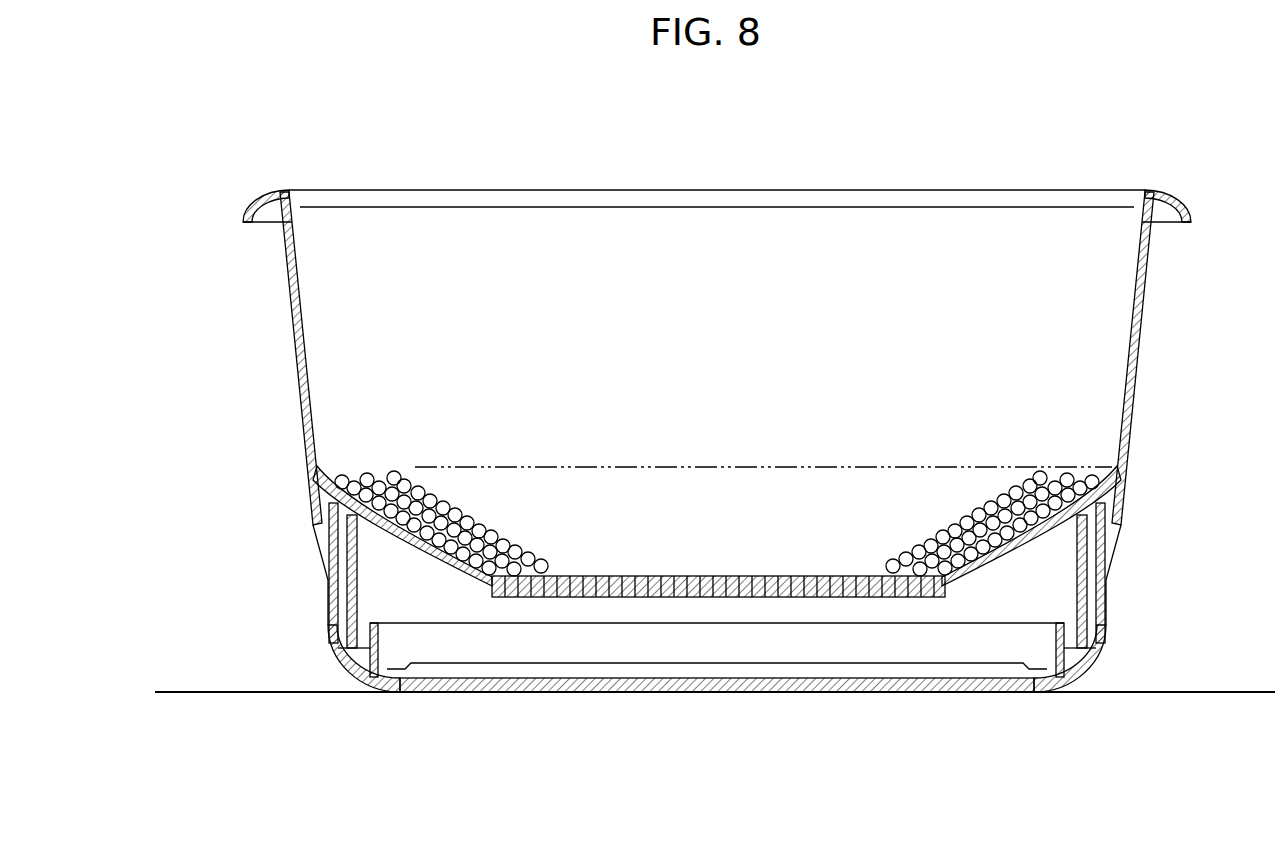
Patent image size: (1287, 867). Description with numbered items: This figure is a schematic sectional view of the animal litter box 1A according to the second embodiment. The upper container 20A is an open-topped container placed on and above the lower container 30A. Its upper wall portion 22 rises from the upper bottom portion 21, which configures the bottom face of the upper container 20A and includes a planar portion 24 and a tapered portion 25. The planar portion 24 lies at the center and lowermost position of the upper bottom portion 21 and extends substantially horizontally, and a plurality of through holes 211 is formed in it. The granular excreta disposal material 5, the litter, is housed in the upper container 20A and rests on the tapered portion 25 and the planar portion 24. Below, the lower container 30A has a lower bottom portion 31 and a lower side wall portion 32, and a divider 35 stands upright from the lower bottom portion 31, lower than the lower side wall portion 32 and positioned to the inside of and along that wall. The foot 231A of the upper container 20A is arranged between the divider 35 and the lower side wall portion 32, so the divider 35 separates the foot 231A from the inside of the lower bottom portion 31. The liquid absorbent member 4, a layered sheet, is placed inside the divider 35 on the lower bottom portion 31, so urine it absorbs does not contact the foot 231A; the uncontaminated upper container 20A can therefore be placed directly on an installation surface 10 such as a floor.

The animal litter box 1A is at (957, 147).
The upper container 20A is at (294, 180).
The upper bottom portion 21 is at (670, 415).
The upper wall portion 22 is at (328, 398).
The planar portion 24 is at (750, 515).
The tapered portion 25 is at (382, 520).
The excreta disposal material 5 is at (448, 508).
The through hole 211 is at (550, 600).
The foot 231A is at (1082, 555).
The lower side wall portion 32 is at (1100, 593).
The divider 35 is at (372, 633).
The lower container 30A is at (336, 670).
The lower bottom portion 31 is at (876, 676).
The liquid absorbent member 4 is at (980, 671).
The installation surface 10 is at (1268, 727).